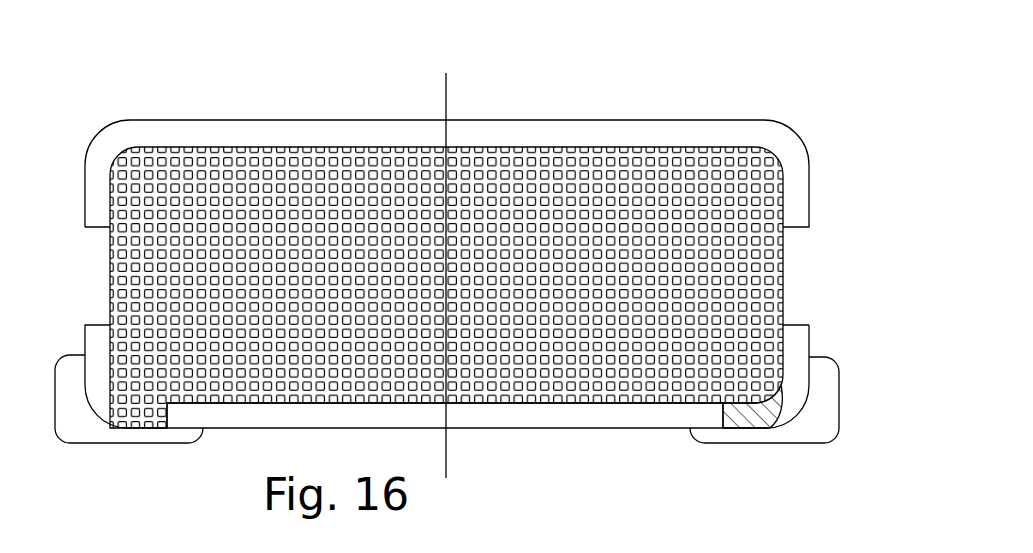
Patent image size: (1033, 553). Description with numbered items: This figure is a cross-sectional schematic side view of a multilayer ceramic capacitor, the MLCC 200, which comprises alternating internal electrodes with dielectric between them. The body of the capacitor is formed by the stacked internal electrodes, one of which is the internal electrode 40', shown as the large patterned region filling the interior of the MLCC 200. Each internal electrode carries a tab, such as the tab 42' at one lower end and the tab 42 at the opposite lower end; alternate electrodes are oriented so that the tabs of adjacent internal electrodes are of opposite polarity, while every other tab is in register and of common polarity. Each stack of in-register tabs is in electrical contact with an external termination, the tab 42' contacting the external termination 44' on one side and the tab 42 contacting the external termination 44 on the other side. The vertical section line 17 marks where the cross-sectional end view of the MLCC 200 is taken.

The MLCC 200 is at (731, 99).
The internal electrode 40' is at (446, 242).
The tab 42' is at (430, 467).
The tab 42 is at (742, 454).
The external termination 44' is at (125, 443).
The external termination 44 is at (772, 434).
The section line 17 is at (528, 478).